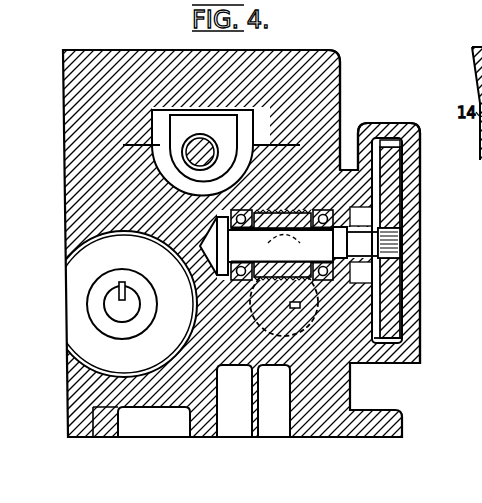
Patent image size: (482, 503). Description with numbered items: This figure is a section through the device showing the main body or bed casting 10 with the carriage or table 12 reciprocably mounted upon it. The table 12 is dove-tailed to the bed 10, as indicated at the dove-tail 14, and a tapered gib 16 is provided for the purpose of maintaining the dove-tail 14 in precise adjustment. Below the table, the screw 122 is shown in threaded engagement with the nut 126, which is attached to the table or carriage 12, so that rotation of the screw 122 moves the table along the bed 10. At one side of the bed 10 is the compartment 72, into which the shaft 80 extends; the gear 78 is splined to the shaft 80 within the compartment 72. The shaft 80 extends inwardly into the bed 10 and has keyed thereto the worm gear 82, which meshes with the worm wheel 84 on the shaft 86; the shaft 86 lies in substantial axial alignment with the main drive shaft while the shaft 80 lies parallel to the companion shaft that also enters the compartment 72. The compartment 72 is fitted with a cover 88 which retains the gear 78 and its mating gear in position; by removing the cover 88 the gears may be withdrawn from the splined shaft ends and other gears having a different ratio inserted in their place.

The main body or bed casting 10 is at (68, 396).
The carriage or table 12 is at (331, 58).
The dove-tail 14 is at (141, 140).
The tapered gib 16 is at (341, 93).
The compartment 72 is at (381, 138).
The gear 78 is at (392, 178).
The shaft 80 is at (321, 261).
The worm gear 82 is at (298, 210).
The worm wheel 84 is at (290, 288).
The shaft 86 is at (272, 300).
The cover 88 is at (421, 196).
The screw 122 is at (199, 150).
The nut 126 is at (222, 130).